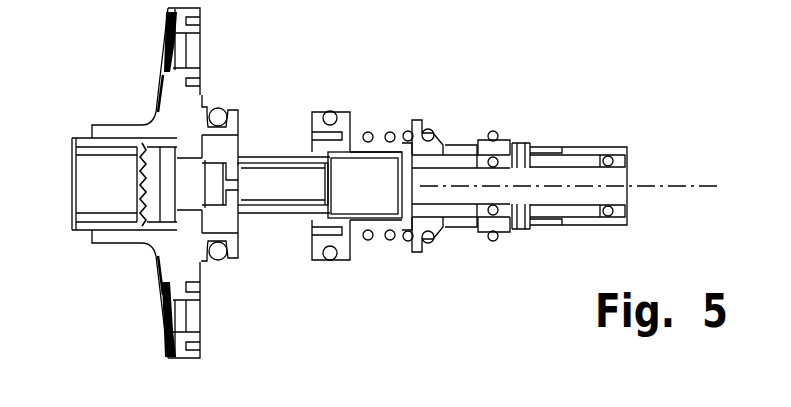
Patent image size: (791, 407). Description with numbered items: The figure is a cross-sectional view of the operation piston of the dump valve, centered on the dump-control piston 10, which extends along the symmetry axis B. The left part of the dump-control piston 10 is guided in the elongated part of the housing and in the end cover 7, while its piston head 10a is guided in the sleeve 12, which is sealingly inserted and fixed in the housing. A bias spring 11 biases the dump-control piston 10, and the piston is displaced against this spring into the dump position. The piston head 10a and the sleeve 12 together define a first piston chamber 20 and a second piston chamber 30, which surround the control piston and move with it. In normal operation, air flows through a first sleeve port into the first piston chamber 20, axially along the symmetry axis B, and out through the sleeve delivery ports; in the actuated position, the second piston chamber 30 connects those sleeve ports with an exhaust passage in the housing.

The end cover 7 is at (198, 95).
The dump-control piston 10 is at (368, 219).
The piston head 10a is at (593, 182).
The bias spring 11 is at (365, 137).
The sleeve 12 is at (485, 233).
The first piston chamber 20 is at (537, 138).
The second piston chamber 30 is at (457, 138).
The symmetry axis B is at (700, 187).